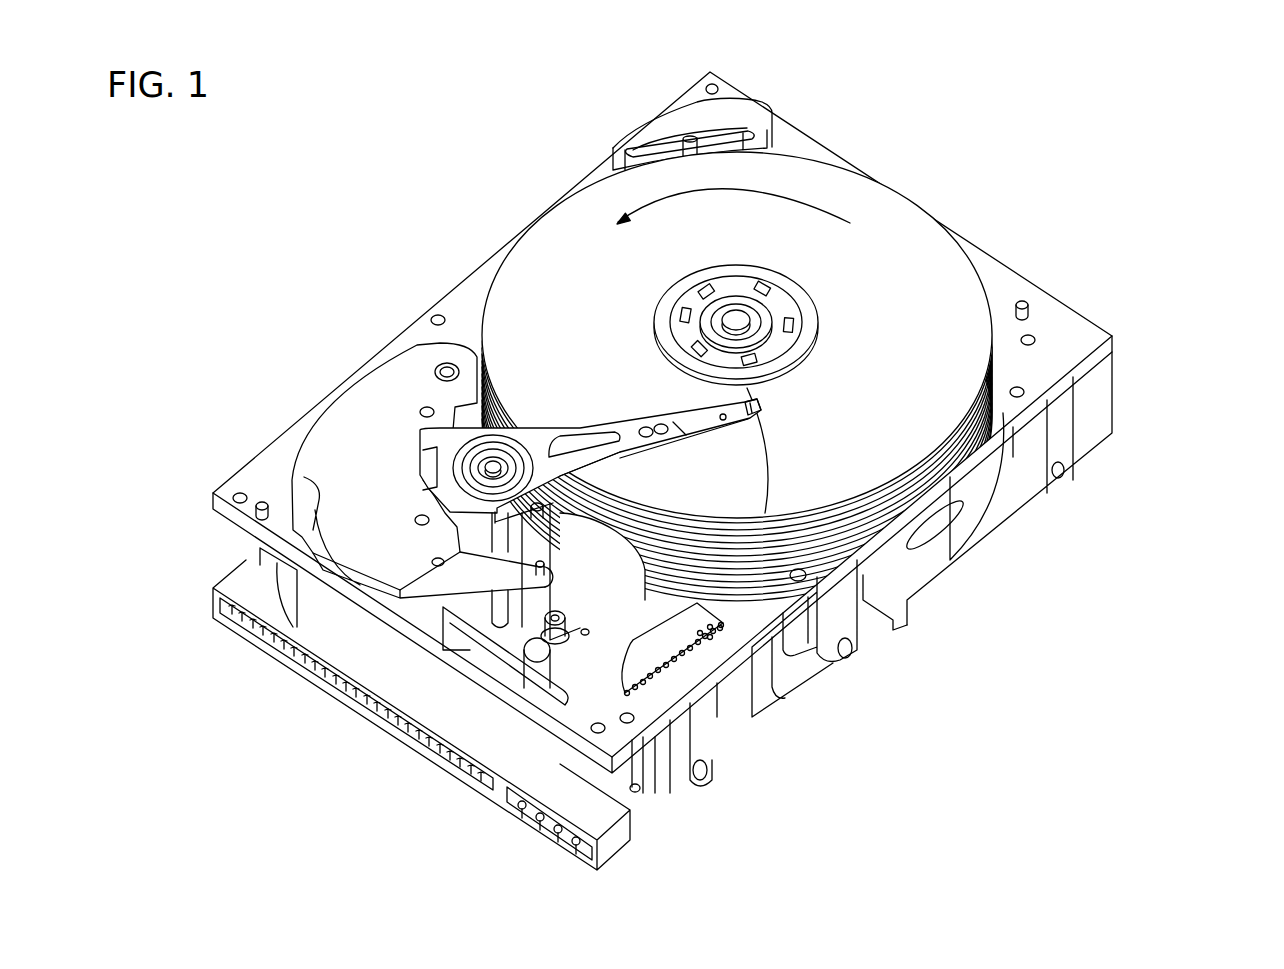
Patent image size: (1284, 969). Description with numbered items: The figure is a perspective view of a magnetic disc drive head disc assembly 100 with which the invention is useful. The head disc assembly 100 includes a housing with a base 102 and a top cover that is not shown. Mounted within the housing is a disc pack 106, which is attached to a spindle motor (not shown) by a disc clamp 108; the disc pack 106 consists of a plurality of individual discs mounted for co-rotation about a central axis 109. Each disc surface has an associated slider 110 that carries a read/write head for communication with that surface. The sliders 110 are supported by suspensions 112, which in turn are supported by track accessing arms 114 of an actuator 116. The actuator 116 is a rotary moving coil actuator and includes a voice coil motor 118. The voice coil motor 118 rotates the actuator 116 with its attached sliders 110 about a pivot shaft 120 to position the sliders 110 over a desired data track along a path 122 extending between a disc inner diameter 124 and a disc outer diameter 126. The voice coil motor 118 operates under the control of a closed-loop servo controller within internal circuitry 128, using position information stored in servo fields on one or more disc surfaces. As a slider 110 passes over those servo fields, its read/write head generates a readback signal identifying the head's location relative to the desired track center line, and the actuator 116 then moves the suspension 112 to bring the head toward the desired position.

The head disc assembly 100 is at (1140, 167).
The base 102 is at (1060, 337).
The disc pack 106 is at (851, 197).
The disc clamp 108 is at (697, 303).
The central axis 109 is at (738, 327).
The slider 110 is at (770, 412).
The suspension 112 is at (695, 412).
The track accessing arm 114 is at (628, 450).
The actuator 116 is at (475, 434).
The voice coil motor 118 is at (357, 437).
The pivot shaft 120 is at (495, 466).
The path 122 is at (767, 447).
The disc inner diameter 124 is at (820, 338).
The disc outer diameter 126 is at (987, 355).
The internal circuitry 128 is at (642, 662).